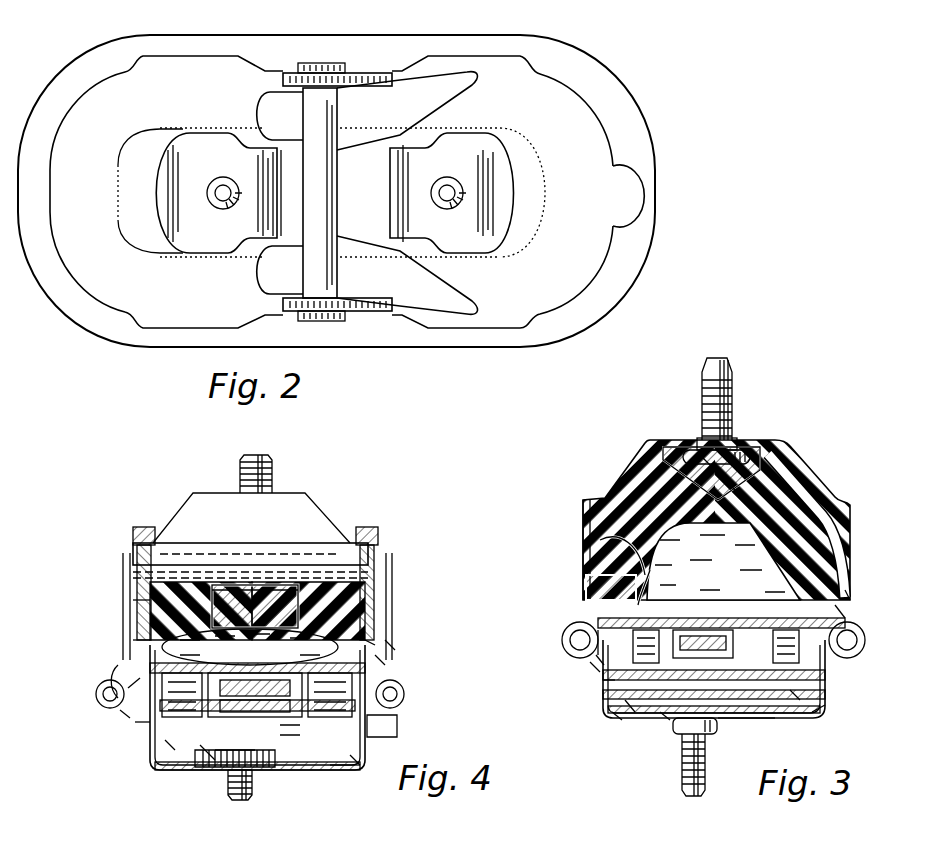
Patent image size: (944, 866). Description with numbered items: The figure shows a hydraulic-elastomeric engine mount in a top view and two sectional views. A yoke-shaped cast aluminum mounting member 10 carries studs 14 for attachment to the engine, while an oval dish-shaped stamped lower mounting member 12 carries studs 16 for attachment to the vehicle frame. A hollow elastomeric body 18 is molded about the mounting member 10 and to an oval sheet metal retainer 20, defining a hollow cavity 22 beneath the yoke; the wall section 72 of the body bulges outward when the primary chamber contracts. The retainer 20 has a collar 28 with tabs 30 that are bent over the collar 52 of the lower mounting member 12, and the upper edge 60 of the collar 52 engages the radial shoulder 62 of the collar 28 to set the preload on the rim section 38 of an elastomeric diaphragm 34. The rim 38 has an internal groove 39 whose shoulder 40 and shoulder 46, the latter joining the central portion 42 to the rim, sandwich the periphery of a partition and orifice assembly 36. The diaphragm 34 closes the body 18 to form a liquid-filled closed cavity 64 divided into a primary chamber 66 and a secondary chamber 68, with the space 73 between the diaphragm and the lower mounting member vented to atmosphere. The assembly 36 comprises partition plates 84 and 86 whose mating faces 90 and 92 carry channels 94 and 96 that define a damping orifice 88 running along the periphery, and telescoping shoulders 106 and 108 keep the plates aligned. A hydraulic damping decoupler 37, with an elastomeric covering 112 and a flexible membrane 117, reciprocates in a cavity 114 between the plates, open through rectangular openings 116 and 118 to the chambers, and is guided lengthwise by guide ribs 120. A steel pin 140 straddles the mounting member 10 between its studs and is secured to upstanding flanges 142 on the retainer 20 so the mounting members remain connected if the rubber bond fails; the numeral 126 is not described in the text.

In FIG. 2, the mounting member 10 is at (500, 157).
In FIG. 4, the mounting member 10 is at (252, 585).
In FIG. 3, the mounting member 10 is at (762, 448).
In FIG. 4, the mounting member 12 is at (338, 772).
In FIG. 3, the mounting member 12 is at (828, 712).
In FIG. 2, the studs 14 is at (223, 187).
In FIG. 4, the studs 14 is at (274, 471).
In FIG. 3, the studs 14 is at (735, 366).
In FIG. 4, the studs 16 is at (258, 802).
In FIG. 3, the studs 16 is at (708, 762).
In FIG. 2, the elastomeric body 18 is at (178, 72).
In FIG. 4, the elastomeric body 18 is at (300, 505).
In FIG. 3, the elastomeric body 18 is at (800, 480).
In FIG. 4, the retainer 20 is at (130, 616).
In FIG. 3, the retainer 20 is at (585, 523).
In FIG. 4, the hollow cavity 22 is at (145, 638).
In FIG. 3, the hollow cavity 22 is at (634, 533).
In FIG. 4, the collar 28 is at (104, 682).
In FIG. 3, the collar 28 is at (566, 636).
In FIG. 4, the tabs 30 is at (398, 725).
In FIG. 3, the tabs 30 is at (578, 662).
In FIG. 4, the elastomeric diaphragm 34 is at (192, 762).
In FIG. 3, the elastomeric diaphragm 34 is at (607, 708).
In FIG. 4, the partition and orifice assembly 36 is at (372, 641).
In FIG. 3, the partition and orifice assembly 36 is at (842, 600).
In FIG. 4, the hydraulic damping decoupler 37 is at (255, 678).
In FIG. 3, the hydraulic damping decoupler 37 is at (740, 632).
In FIG. 4, the rim section 38 is at (130, 716).
In FIG. 3, the rim section 38 is at (572, 652).
In FIG. 4, the internal groove 39 is at (382, 662).
In FIG. 3, the internal groove 39 is at (848, 618).
In FIG. 4, the shoulder 40 is at (128, 667).
In FIG. 3, the shoulder 40 is at (611, 591).
In FIG. 4, the central portion 42 is at (208, 758).
In FIG. 3, the central portion 42 is at (663, 722).
In FIG. 4, the shoulder 46 is at (145, 721).
In FIG. 3, the shoulder 46 is at (590, 672).
In FIG. 4, the collar 52 is at (103, 693).
In FIG. 3, the collar 52 is at (858, 645).
In FIG. 4, the upper edge 60 is at (403, 700).
In FIG. 3, the upper edge 60 is at (565, 625).
In FIG. 4, the radial shoulder 62 is at (396, 686).
In FIG. 3, the radial shoulder 62 is at (578, 622).
In FIG. 4, the closed cavity 64 is at (278, 612).
In FIG. 3, the closed cavity 64 is at (812, 498).
In FIG. 4, the primary chamber 66 is at (140, 618).
In FIG. 3, the primary chamber 66 is at (775, 466).
In FIG. 4, the secondary chamber 68 is at (232, 776).
In FIG. 3, the secondary chamber 68 is at (760, 721).
In FIG. 4, the wall section 72 is at (212, 590).
In FIG. 4, the space 73 is at (172, 746).
In FIG. 3, the space 73 is at (618, 720).
In FIG. 4, the partition plate 84 is at (398, 648).
In FIG. 3, the partition plate 84 is at (879, 579).
In FIG. 4, the partition plate 86 is at (158, 732).
In FIG. 3, the partition plate 86 is at (840, 702).
In FIG. 4, the damping orifice 88 is at (190, 677).
In FIG. 3, the damping orifice 88 is at (668, 625).
In FIG. 4, the mating face 90 is at (182, 681).
In FIG. 3, the mating face 90 is at (627, 721).
In FIG. 4, the mating face 92 is at (135, 703).
In FIG. 3, the mating face 92 is at (656, 562).
In FIG. 4, the channel 94 is at (308, 688).
In FIG. 3, the channel 94 is at (780, 635).
In FIG. 4, the channel 96 is at (360, 764).
In FIG. 3, the channel 96 is at (800, 700).
In FIG. 4, the telescoping shoulder 106 is at (305, 752).
In FIG. 3, the telescoping shoulder 106 is at (665, 632).
In FIG. 4, the telescoping shoulder 108 is at (328, 727).
In FIG. 3, the telescoping shoulder 108 is at (635, 713).
In FIG. 4, the elastomeric covering 112 is at (228, 770).
In FIG. 3, the elastomeric covering 112 is at (730, 720).
In FIG. 4, the cavity 114 is at (250, 645).
In FIG. 3, the cavity 114 is at (705, 640).
In FIG. 4, the opening 116 is at (255, 681).
In FIG. 4, the flexible membrane 117 is at (272, 755).
In FIG. 4, the opening 118 is at (292, 737).
In FIG. 3, the guide ribs 120 is at (680, 742).
In FIG. 3, the decoupler 126 is at (716, 607).
In FIG. 2, the steel pin 140 is at (330, 78).
In FIG. 4, the steel pin 140 is at (180, 545).
In FIG. 2, the upstanding flanges 142 is at (372, 80).
In FIG. 4, the upstanding flanges 142 is at (147, 527).